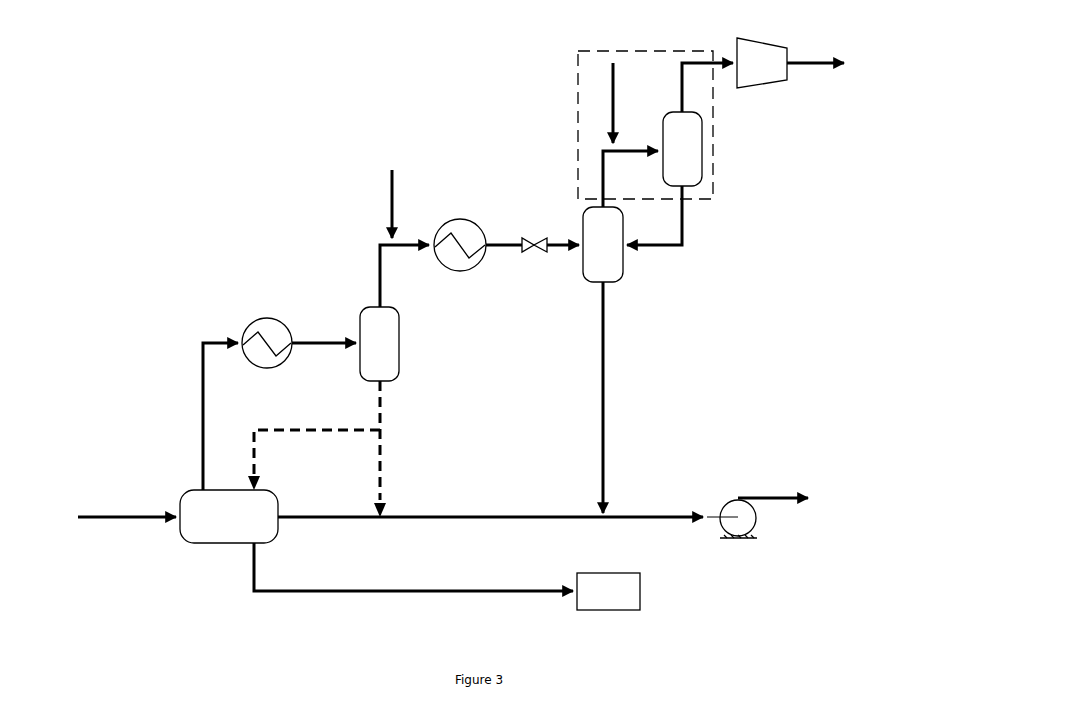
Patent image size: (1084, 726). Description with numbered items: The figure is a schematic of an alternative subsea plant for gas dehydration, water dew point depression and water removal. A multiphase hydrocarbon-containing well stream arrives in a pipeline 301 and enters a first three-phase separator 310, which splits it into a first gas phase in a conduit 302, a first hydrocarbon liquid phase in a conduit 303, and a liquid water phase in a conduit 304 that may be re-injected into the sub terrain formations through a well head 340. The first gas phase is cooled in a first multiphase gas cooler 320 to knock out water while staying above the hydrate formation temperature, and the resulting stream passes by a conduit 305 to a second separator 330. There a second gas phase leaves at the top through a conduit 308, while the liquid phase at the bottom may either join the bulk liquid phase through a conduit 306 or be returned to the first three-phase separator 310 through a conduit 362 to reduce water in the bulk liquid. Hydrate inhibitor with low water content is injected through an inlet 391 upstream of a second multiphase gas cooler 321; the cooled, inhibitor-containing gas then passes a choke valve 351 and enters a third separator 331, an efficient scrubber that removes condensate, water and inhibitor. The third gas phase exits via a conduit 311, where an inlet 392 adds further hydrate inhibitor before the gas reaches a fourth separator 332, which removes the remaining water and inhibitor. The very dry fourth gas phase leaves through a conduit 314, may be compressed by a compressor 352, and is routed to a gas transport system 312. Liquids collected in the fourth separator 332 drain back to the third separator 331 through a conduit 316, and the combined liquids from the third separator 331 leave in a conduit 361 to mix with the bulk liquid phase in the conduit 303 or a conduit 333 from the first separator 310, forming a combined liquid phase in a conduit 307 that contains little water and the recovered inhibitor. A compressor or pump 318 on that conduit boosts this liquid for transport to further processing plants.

The pipeline 301 is at (115, 499).
The conduit 302 is at (189, 416).
The conduit 303 is at (359, 543).
The conduit 304 is at (413, 586).
The conduit 305 is at (317, 302).
The conduit 306 is at (406, 449).
The conduit 307 is at (793, 479).
The conduit 308 is at (372, 270).
The first three-phase separator 310 is at (229, 516).
The conduit 311 is at (594, 167).
The gas transport system 312 is at (815, 49).
The conduit 314 is at (645, 110).
The conduit 316 is at (696, 215).
The compressor or pump 318 is at (771, 527).
The first multiphase gas cooler 320 is at (248, 324).
The second multiphase gas cooler 321 is at (447, 204).
The second separator 330 is at (379, 344).
The third separator 331 is at (603, 244).
The fourth separator 332 is at (682, 149).
The conduit 333 is at (589, 499).
The well head 340 is at (608, 591).
The choke valve 351 is at (522, 198).
The compressor 352 is at (734, 75).
The conduit 361 is at (570, 397).
The conduit 362 is at (314, 460).
The inlet 391 is at (365, 204).
The inlet 392 is at (577, 103).